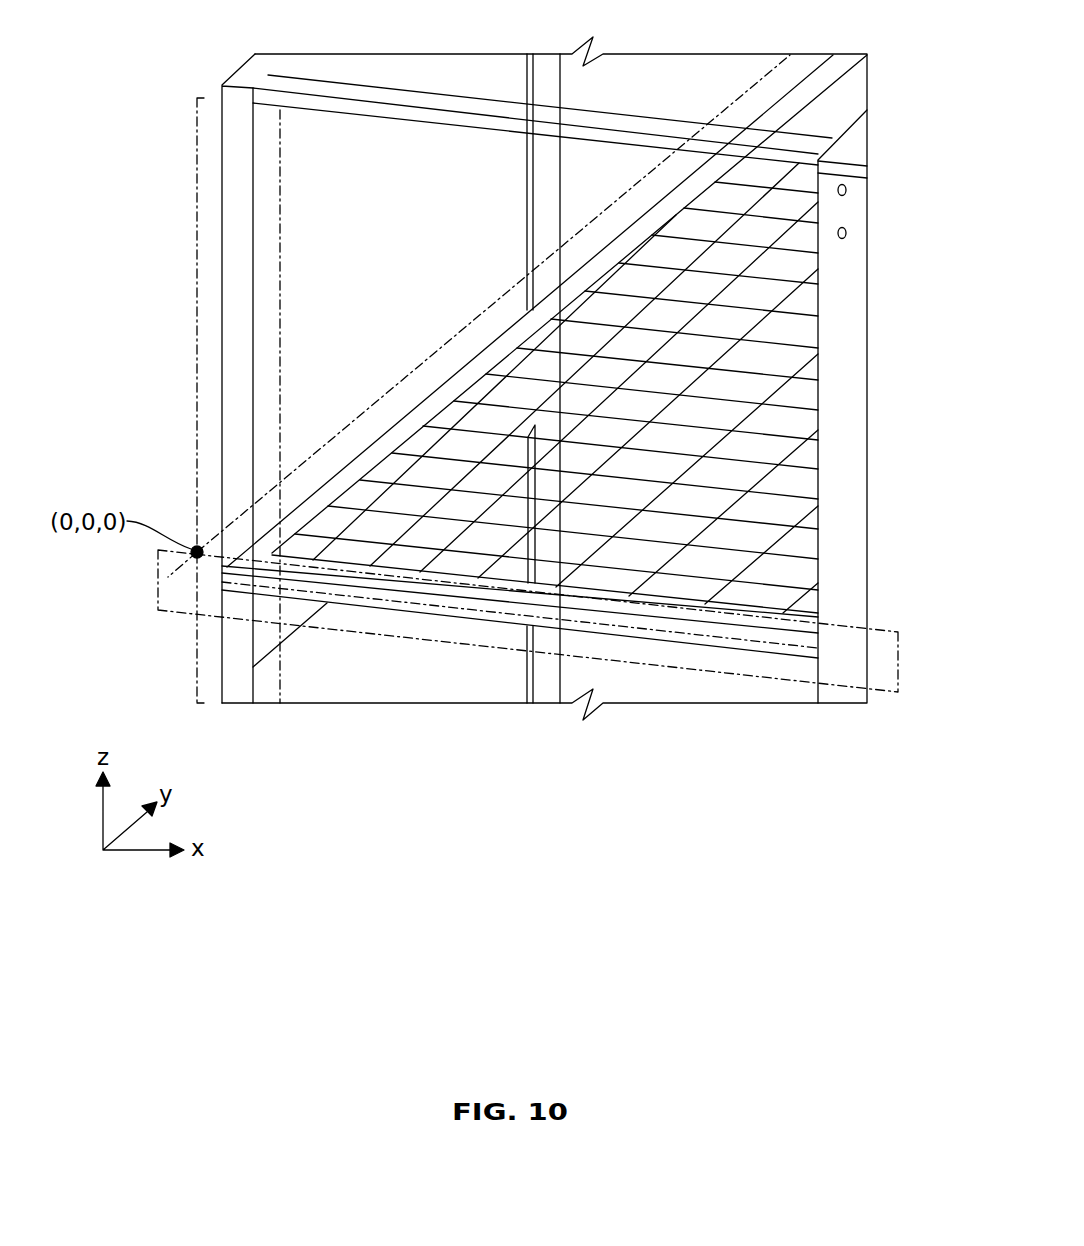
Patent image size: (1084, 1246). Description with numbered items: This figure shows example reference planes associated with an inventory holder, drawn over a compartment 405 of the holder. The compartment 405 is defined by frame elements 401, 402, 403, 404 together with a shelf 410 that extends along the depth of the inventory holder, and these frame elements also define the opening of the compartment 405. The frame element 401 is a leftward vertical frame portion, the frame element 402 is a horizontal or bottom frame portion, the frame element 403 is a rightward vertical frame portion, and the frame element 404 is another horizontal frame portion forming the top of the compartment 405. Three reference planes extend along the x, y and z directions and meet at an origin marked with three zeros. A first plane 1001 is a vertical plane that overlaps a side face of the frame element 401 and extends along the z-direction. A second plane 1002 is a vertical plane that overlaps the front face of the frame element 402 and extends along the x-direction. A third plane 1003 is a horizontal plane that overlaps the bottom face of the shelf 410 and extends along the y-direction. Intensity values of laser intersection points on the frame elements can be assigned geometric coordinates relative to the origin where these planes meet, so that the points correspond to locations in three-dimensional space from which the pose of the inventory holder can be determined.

The frame element 401 is at (223, 304).
The frame element 402 is at (480, 620).
The frame element 403 is at (848, 310).
The frame element 404 is at (397, 107).
The compartment 405 is at (318, 209).
The shelf 410 is at (502, 430).
The first plane 1001 is at (198, 388).
The second plane 1002 is at (159, 583).
The third plane 1003 is at (366, 411).